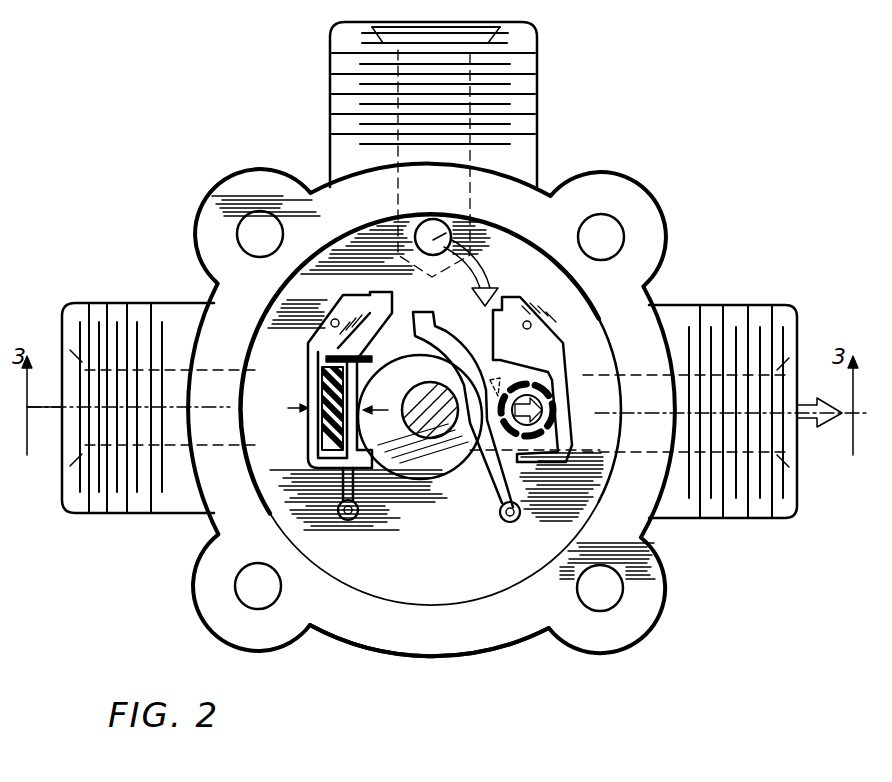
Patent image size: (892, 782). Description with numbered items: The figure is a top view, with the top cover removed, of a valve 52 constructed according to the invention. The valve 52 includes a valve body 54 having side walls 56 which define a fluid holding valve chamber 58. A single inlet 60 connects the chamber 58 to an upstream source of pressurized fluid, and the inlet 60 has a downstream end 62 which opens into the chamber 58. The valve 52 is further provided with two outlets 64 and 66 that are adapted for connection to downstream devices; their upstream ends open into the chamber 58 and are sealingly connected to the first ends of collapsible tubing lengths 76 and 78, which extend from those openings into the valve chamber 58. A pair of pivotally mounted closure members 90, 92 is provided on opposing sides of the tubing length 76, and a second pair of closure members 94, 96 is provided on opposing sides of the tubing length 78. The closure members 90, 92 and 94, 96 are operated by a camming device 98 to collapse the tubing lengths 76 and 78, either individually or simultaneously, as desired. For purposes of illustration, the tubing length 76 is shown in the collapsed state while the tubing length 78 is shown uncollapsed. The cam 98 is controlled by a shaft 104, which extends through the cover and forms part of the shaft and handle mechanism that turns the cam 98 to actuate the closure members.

The valve 52 is at (655, 628).
The valve body 54 is at (503, 645).
The side walls 56 is at (431, 640).
The valve chamber 58 is at (472, 581).
The inlet 60 is at (467, 31).
The downstream end 62 is at (433, 218).
The outlet 64 is at (778, 511).
The outlet 66 is at (147, 497).
The collapsible tubing length 76 is at (553, 407).
The collapsible tubing length 78 is at (318, 391).
The closure member 90 is at (443, 342).
The closure member 92 is at (507, 304).
The closure member 94 is at (381, 303).
The closure member 96 is at (322, 336).
The camming device 98 is at (395, 370).
The shaft 104 is at (533, 486).